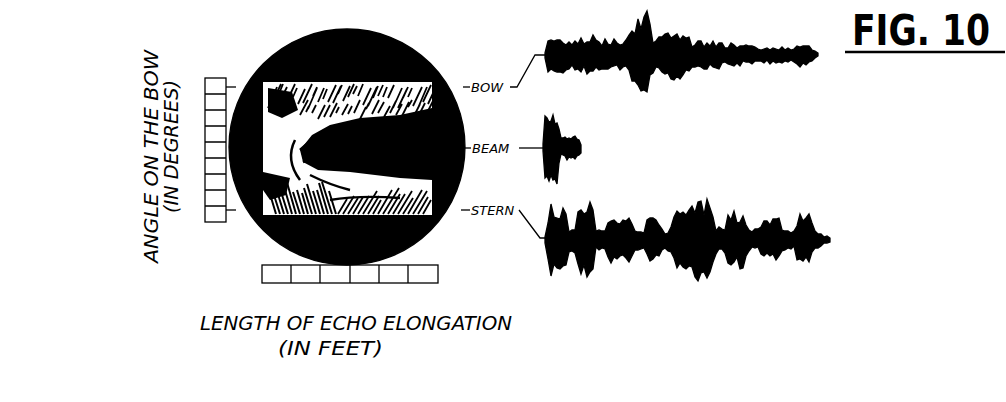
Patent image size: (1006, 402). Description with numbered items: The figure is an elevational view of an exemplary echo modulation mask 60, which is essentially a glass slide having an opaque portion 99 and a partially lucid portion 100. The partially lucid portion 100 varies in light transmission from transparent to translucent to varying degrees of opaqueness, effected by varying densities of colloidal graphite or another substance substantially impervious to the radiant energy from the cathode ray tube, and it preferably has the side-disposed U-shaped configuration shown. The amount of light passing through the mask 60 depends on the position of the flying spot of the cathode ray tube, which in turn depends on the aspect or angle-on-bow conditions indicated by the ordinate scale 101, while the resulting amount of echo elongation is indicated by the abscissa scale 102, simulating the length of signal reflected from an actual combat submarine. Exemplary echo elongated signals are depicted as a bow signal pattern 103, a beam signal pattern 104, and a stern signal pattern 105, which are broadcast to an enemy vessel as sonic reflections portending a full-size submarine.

The echo modulation mask 60 is at (276, 36).
The opaque portion 99 is at (357, 32).
The partially lucid portion 100 is at (423, 58).
The ordinate scale 101 is at (226, 82).
The abscissa scale 102 is at (440, 278).
The bow signal pattern 103 is at (583, 40).
The beam signal pattern 104 is at (573, 150).
The stern signal pattern 105 is at (590, 227).